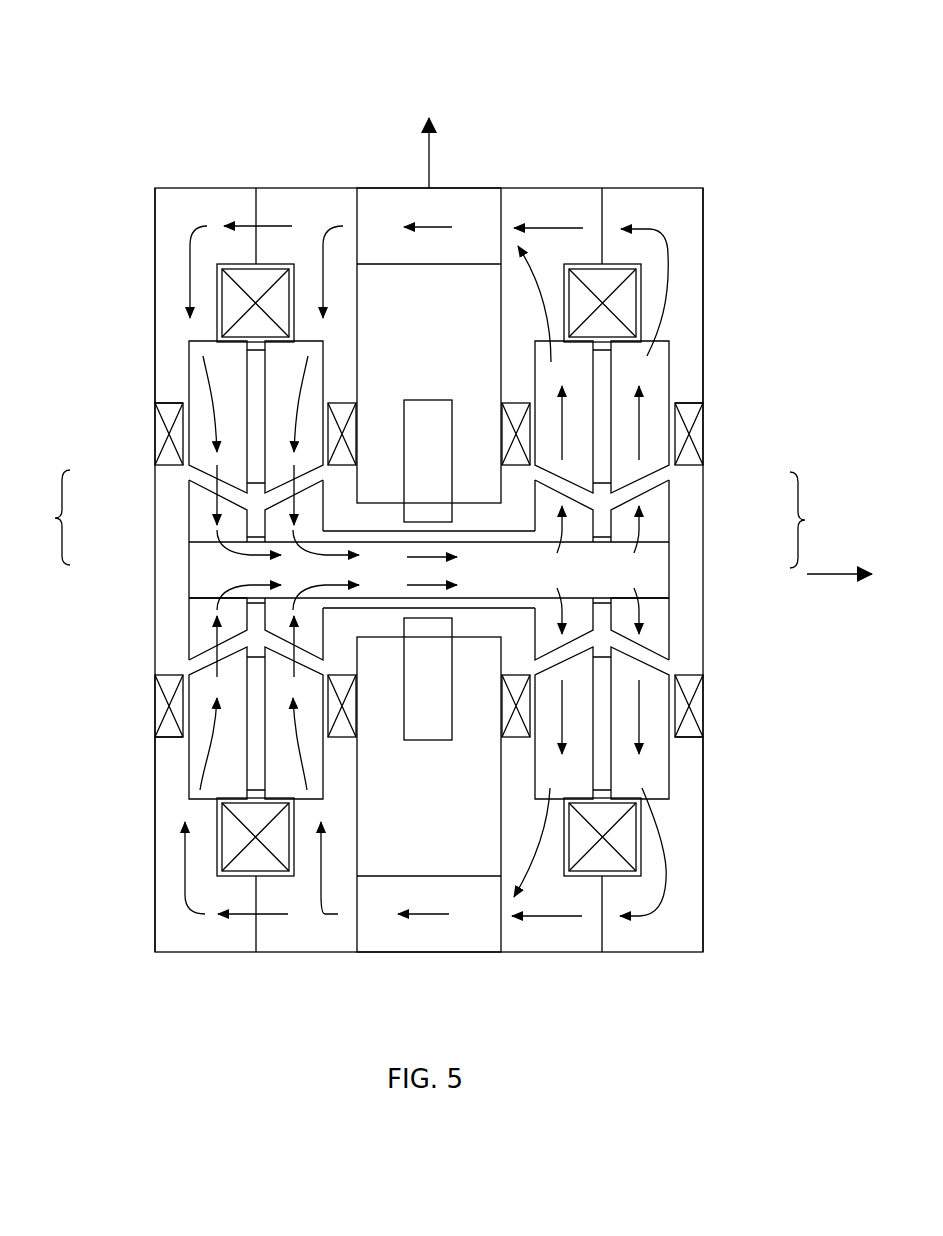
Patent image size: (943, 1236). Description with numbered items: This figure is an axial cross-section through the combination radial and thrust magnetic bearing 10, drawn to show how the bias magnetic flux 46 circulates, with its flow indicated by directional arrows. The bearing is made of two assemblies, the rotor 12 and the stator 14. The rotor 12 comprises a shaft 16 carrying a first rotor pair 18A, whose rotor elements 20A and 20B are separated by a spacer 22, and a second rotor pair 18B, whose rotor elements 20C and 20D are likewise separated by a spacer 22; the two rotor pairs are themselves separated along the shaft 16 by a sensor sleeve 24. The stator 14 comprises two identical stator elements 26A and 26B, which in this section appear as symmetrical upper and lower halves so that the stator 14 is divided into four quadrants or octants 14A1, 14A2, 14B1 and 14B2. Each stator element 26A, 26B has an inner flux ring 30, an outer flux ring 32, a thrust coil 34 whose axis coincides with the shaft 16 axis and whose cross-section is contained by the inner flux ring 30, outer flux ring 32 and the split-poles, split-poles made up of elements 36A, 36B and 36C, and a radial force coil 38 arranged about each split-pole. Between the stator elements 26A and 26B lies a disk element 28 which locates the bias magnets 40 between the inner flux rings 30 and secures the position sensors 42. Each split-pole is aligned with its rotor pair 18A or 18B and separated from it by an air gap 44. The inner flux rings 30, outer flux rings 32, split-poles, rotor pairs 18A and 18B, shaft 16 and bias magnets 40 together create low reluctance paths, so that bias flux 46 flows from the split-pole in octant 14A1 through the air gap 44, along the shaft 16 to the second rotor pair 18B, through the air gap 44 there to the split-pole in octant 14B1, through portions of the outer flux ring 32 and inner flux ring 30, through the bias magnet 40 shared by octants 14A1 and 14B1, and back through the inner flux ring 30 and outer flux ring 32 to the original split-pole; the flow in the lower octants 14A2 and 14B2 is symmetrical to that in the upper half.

The magnetic bearing 10 is at (509, 80).
The rotor 12 is at (9, 587).
The stator 14 is at (412, 53).
The octant 14A1 is at (90, 110).
The octant 14A2 is at (105, 1008).
The octant 14B1 is at (685, 113).
The octant 14B2 is at (681, 1008).
The shaft 16 is at (657, 582).
The first rotor pair 18A is at (40, 517).
The second rotor pair 18B is at (820, 520).
The rotor element 20A is at (203, 512).
The rotor element 20B is at (207, 493).
The rotor element 20C is at (590, 510).
The rotor element 20D is at (657, 515).
The spacer 22 is at (190, 549).
The sensor sleeve 24 is at (197, 575).
The stator element 26A is at (282, 127).
The stator element 26B is at (627, 127).
The disk element 28 is at (450, 305).
The inner flux ring 30 is at (295, 195).
The outer flux ring 32 is at (203, 195).
The thrust coil 34 is at (229, 290).
The split-pole element 36A is at (192, 382).
The split-pole element 36B is at (275, 372).
The split-pole element 36C is at (256, 360).
The radial force coil 38 is at (340, 426).
The bias magnet 40 is at (443, 195).
The position sensor 42 is at (432, 404).
The air gap 44 is at (275, 508).
The bias magnetic flux 46 is at (207, 230).